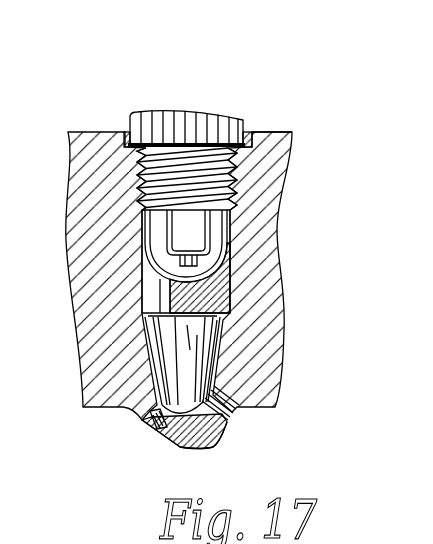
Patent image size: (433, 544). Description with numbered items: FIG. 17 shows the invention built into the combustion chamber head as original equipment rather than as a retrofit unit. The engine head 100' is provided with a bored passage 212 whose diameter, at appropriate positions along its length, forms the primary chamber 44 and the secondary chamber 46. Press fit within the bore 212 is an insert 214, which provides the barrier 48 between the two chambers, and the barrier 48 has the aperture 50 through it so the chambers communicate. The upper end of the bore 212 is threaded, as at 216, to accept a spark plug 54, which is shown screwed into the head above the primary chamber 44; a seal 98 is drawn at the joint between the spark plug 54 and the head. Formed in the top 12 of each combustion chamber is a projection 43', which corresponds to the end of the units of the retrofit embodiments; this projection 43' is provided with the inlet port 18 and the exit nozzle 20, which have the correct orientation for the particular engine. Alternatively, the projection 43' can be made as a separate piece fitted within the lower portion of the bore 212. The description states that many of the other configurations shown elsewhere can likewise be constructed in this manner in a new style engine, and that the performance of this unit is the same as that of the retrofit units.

The top of combustion chamber 12 is at (255, 410).
The inlet port 18 is at (230, 420).
The exit nozzle 20 is at (157, 423).
The projection 43' is at (184, 442).
The primary chamber 44 is at (142, 244).
The secondary chamber 46 is at (142, 358).
The barrier 48 is at (185, 320).
The aperture 50 is at (177, 300).
The spark plug 54 is at (207, 110).
The seal ring 98 is at (126, 133).
The engine head 100' is at (290, 99).
The bored passage 212 is at (140, 223).
The insert 214 is at (142, 280).
The threaded upper end 216 is at (233, 180).